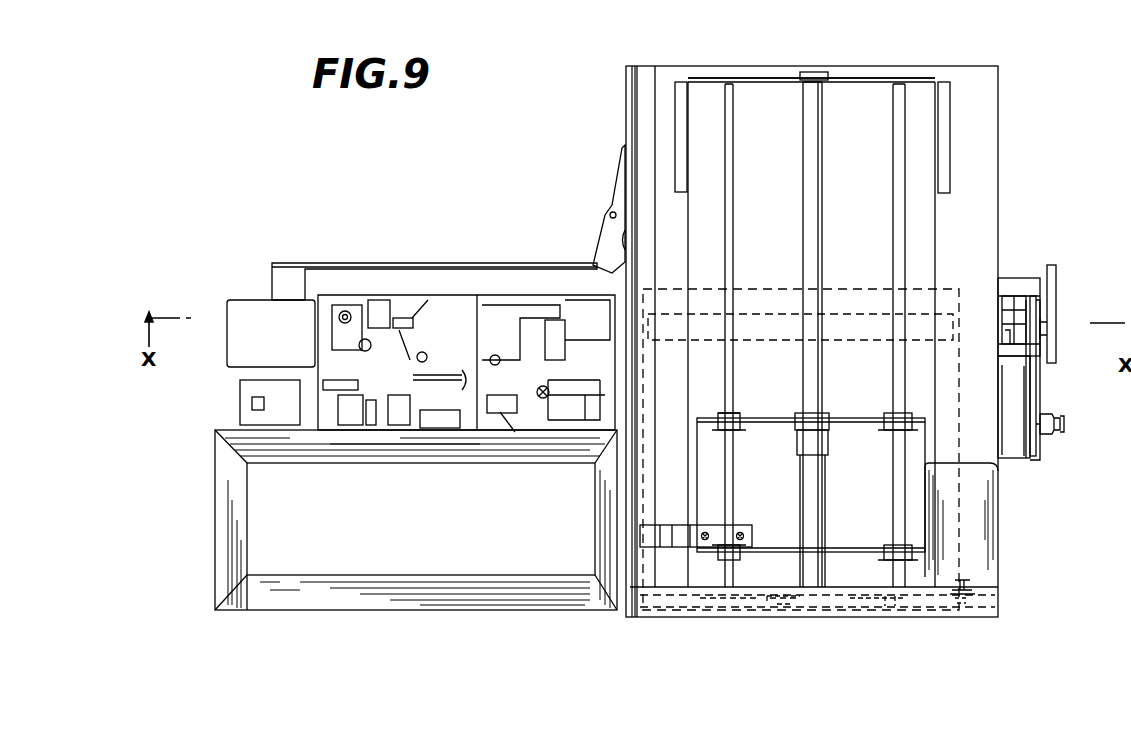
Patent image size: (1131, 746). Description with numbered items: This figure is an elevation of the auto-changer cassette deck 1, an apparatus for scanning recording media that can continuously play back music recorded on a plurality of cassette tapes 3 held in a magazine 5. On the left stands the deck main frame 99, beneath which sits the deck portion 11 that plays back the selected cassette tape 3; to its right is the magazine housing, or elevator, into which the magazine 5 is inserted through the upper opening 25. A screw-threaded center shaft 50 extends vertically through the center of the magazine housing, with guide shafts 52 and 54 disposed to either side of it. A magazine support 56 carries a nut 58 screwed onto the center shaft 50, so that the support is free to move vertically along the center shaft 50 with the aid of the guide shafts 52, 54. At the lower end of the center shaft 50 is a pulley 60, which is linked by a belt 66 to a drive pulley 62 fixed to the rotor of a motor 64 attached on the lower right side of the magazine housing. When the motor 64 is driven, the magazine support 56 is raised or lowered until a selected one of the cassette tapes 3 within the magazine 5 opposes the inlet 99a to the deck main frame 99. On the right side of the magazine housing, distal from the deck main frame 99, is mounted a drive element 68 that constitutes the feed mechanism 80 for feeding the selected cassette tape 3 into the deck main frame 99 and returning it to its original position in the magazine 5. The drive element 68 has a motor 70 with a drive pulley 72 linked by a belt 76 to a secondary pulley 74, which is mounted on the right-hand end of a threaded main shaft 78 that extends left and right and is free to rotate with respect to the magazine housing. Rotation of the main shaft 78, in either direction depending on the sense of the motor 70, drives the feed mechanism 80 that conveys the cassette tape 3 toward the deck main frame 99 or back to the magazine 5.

The auto-changer cassette deck 1 is at (590, 90).
The cassette tape 3 is at (762, 312).
The magazine 5 is at (856, 290).
The deck portion 11 is at (216, 404).
The upper opening 25 is at (862, 68).
The center shaft 50 is at (804, 100).
The guide shaft 52 is at (735, 96).
The guide shaft 54 is at (885, 96).
The magazine support 56 is at (858, 416).
The nut 58 is at (828, 444).
The pulley 60 is at (782, 600).
The drive pulley 62 is at (960, 600).
The motor 64 is at (1000, 566).
The belt 66 is at (871, 600).
The drive element 68 is at (1038, 447).
The motor 70 is at (1010, 462).
The drive pulley 72 is at (1064, 425).
The secondary pulley 74 is at (1058, 276).
The belt 76 is at (1040, 388).
The main shaft 78 is at (1015, 300).
The feed mechanism 80 is at (1010, 276).
The deck main frame 99 is at (437, 265).
The inlet 99a is at (637, 300).